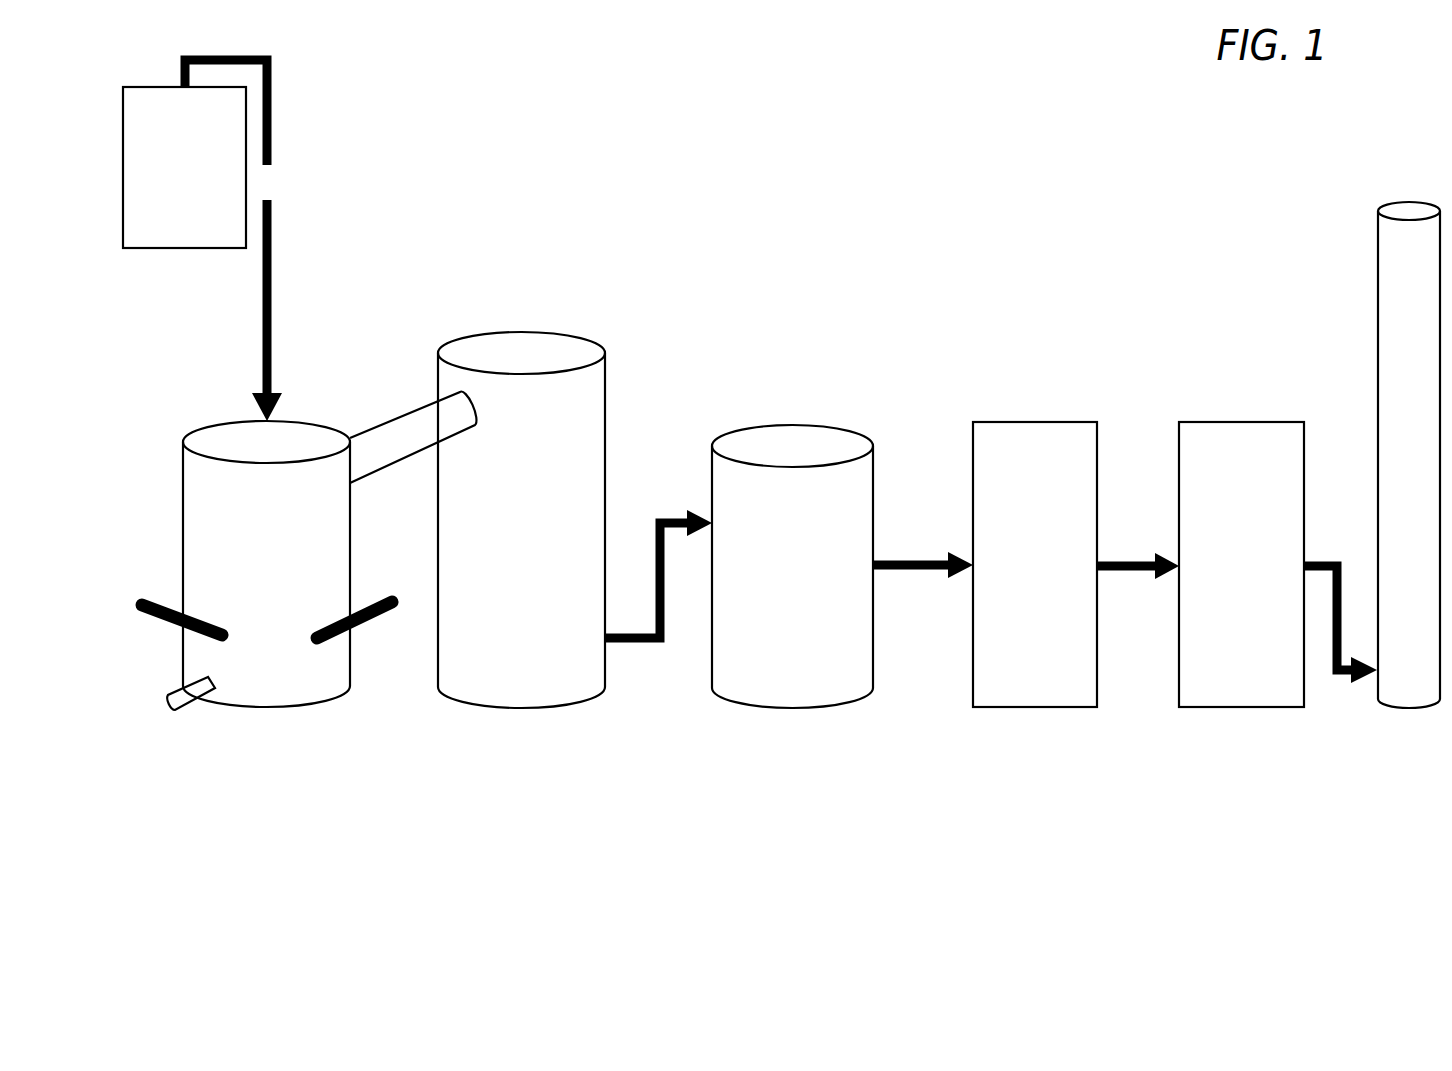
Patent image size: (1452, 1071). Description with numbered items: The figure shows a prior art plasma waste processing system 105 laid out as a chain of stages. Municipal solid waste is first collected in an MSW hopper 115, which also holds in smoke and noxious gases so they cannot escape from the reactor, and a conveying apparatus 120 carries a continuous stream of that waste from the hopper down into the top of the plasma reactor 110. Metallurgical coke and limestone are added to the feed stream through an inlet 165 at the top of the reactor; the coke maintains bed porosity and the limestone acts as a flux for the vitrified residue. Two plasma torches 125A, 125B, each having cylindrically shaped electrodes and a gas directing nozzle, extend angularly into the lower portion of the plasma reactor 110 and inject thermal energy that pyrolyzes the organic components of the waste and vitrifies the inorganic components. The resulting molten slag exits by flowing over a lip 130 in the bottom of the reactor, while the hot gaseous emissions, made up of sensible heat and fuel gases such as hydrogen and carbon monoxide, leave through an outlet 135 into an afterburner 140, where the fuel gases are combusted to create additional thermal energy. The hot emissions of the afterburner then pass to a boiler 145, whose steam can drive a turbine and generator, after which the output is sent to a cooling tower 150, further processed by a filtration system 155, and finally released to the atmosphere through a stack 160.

The plasma waste processing system 105 is at (858, 87).
The plasma reactor 110 is at (266, 564).
The MSW hopper 115 is at (184, 167).
The conveying apparatus 120 is at (236, 240).
The plasma torch 125A is at (187, 630).
The plasma torch 125B is at (377, 617).
The lip 130 is at (166, 702).
The outlet 135 is at (413, 437).
The afterburner 140 is at (521, 520).
The boiler 145 is at (792, 566).
The cooling tower 150 is at (1035, 564).
The filtration system 155 is at (1241, 564).
The stack 160 is at (1409, 455).
The inlet 165 is at (272, 387).